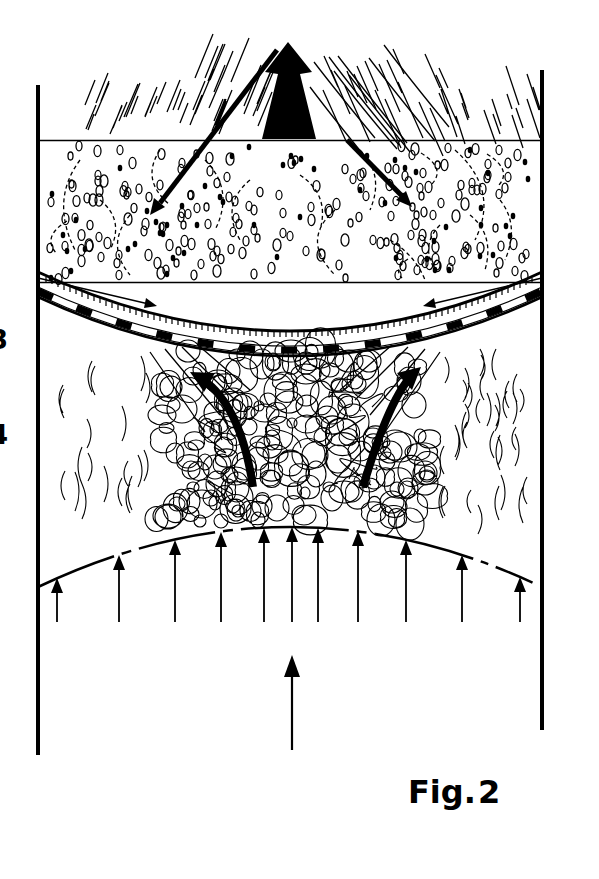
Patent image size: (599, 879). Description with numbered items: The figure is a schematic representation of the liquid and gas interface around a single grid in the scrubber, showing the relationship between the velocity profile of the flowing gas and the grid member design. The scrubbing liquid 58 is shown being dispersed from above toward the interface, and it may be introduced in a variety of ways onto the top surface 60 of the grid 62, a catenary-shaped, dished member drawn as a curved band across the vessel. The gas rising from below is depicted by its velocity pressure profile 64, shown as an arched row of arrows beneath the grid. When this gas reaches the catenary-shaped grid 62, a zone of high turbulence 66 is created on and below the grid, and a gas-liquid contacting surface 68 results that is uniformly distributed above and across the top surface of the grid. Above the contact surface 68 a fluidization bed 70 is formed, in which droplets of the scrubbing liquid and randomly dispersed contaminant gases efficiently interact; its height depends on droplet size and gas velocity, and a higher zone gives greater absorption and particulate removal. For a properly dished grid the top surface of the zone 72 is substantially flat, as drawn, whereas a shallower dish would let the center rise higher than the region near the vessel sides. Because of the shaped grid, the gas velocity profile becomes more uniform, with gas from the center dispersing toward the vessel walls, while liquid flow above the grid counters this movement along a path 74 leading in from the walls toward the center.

The scrubbing liquid 58 is at (194, 176).
The top surface 60 is at (68, 308).
The grid 62 is at (500, 320).
The velocity pressure profile 64 is at (96, 548).
The zone of high turbulence 66 is at (520, 418).
The gas-liquid contacting surface 68 is at (322, 328).
The fluidization bed 70 is at (494, 182).
The top surface of the zone 72 is at (463, 140).
The path 74 is at (458, 308).